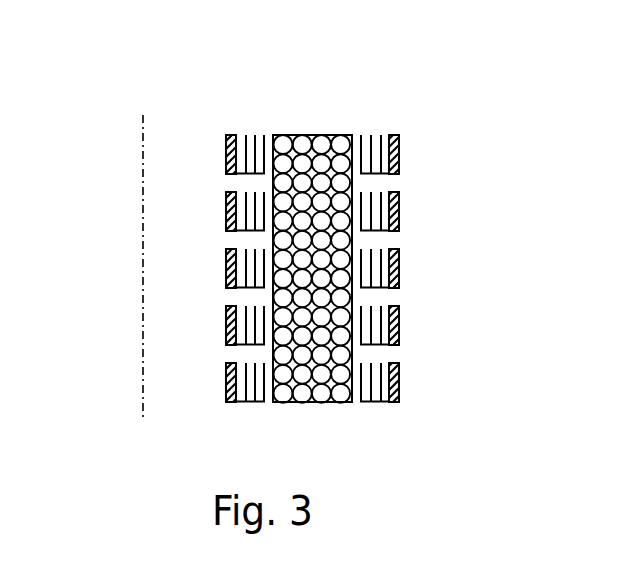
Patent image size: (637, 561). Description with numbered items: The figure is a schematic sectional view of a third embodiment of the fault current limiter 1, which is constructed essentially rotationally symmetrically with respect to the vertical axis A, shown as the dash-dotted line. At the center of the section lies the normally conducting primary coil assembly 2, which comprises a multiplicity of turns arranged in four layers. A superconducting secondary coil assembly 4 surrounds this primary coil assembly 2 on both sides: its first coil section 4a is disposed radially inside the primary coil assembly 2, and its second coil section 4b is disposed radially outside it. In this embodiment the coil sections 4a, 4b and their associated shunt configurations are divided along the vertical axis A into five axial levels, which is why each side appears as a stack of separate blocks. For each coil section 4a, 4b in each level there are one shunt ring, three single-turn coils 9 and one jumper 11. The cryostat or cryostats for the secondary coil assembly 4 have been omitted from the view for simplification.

The fault current limiter 1 is at (452, 99).
The primary coil assembly 2 is at (302, 170).
The secondary coil assembly 4 is at (372, 378).
The first coil section 4a is at (248, 128).
The second coil section 4b is at (436, 242).
The single-turn coil 9 is at (362, 144).
The jumper 11 is at (385, 176).
The vertical axis A is at (143, 212).